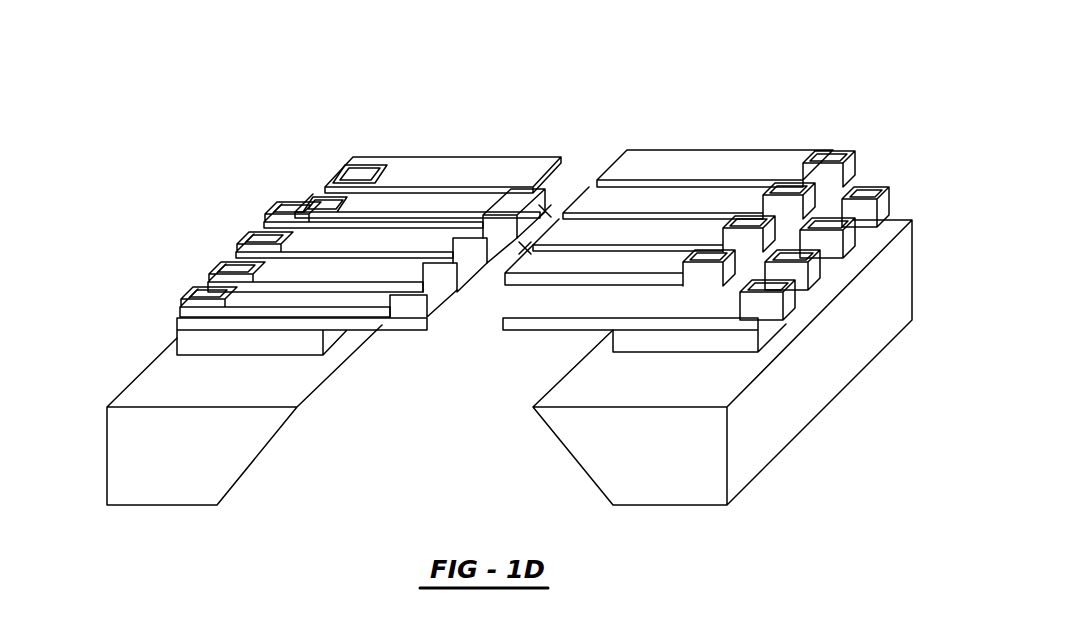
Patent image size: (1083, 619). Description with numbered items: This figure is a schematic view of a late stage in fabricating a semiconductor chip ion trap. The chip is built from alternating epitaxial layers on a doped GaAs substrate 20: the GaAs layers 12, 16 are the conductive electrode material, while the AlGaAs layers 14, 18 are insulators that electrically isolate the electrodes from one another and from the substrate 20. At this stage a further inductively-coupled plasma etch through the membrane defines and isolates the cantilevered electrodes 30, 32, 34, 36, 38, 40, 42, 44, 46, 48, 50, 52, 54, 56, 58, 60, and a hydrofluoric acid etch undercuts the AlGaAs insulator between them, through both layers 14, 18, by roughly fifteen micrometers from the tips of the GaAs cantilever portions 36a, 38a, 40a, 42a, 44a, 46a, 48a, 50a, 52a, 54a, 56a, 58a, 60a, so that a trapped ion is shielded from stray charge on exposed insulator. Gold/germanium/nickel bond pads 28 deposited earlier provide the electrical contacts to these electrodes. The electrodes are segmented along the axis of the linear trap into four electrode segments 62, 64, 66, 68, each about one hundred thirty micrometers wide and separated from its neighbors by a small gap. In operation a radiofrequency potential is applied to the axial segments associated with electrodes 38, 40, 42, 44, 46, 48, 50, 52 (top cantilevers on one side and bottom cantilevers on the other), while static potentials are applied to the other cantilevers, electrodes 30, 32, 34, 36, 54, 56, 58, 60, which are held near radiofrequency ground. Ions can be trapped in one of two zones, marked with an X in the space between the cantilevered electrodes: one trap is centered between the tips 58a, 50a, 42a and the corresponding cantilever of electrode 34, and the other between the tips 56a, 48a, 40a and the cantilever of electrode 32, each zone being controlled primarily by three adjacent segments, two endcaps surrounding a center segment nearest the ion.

The GaAs layer 12 is at (517, 328).
The AlGaAs layer 14 is at (582, 324).
The GaAs layer 16 is at (355, 345).
The AlGaAs layer 18 is at (305, 343).
The GaAs substrate 20 is at (813, 425).
The bond pads 28 is at (885, 268).
The ion trap electrode 30 is at (862, 190).
The ion trap electrode 32 is at (832, 242).
The ion trap electrode 34 is at (806, 268).
The ion trap electrode 36 is at (780, 300).
The GaAs cantilever portion 36a is at (510, 322).
The ion trap electrode 38 is at (825, 150).
The GaAs cantilever portion 38a is at (604, 178).
The ion trap electrode 40 is at (778, 186).
The GaAs cantilever portion 40a is at (576, 208).
The ion trap electrode 42 is at (742, 218).
The GaAs cantilever portion 42a is at (546, 230).
The ion trap electrode 44 is at (700, 252).
The GaAs cantilever portion 44a is at (632, 306).
The ion trap electrode 46 is at (291, 195).
The GaAs cantilever portion 46a is at (547, 209).
The ion trap electrode 48 is at (251, 231).
The GaAs cantilever portion 48a is at (497, 298).
The ion trap electrode 50 is at (217, 270).
The GaAs cantilever portion 50a is at (434, 300).
The ion trap electrode 52 is at (190, 312).
The GaAs cantilever portion 52a is at (462, 322).
The ion trap electrode 54 is at (370, 165).
The GaAs cantilever portion 54a is at (528, 244).
The ion trap electrode 56 is at (372, 190).
The GaAs cantilever portion 56a is at (505, 205).
The ion trap electrode 58 is at (287, 248).
The GaAs cantilever portion 58a is at (477, 222).
The ion trap electrode 60 is at (265, 265).
The GaAs cantilever portion 60a is at (447, 240).
The electrode segment 62 is at (771, 357).
The electrode segment 64 is at (722, 147).
The electrode segment 66 is at (220, 358).
The electrode segment 68 is at (438, 158).